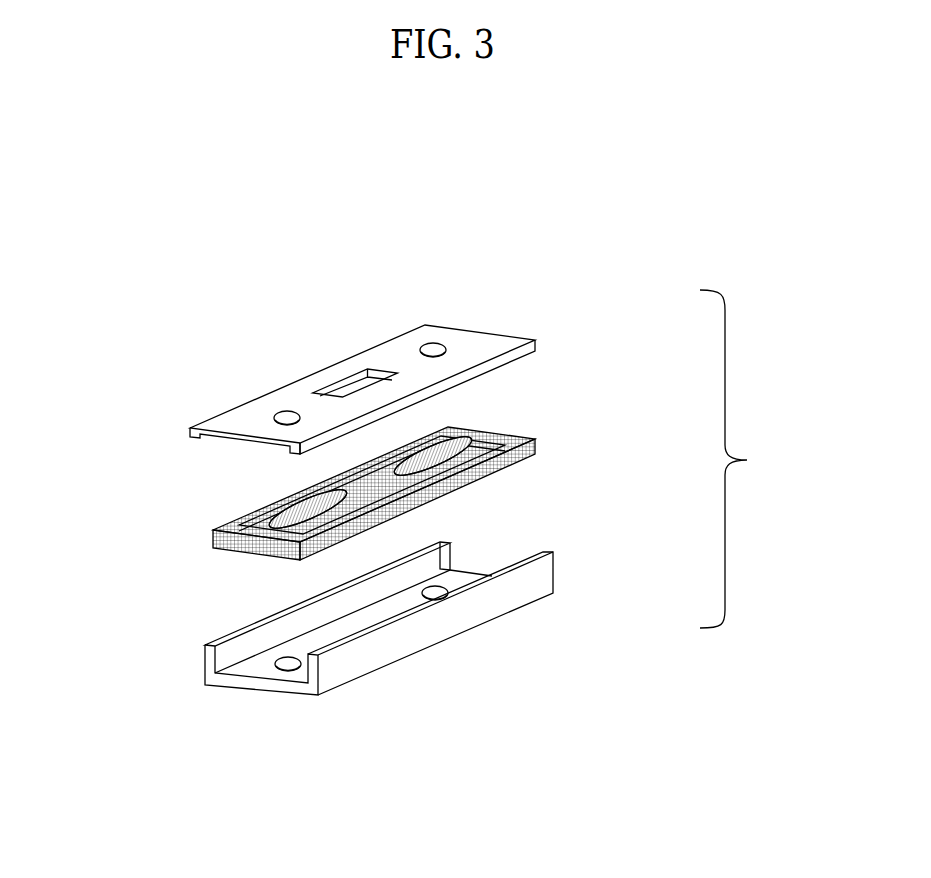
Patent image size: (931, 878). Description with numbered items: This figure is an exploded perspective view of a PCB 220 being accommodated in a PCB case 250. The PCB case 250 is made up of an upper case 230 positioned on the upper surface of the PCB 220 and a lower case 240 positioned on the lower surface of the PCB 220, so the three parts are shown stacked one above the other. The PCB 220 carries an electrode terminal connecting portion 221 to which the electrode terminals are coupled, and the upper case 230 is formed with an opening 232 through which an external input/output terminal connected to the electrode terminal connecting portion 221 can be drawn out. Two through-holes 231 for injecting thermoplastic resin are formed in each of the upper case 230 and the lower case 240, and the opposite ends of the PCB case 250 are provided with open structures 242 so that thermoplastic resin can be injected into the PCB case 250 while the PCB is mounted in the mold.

The PCB 220 is at (307, 493).
The electrode terminal connecting portion 221 is at (278, 502).
The upper case 230 is at (584, 343).
The through-holes 231 is at (437, 349).
The opening 232 is at (352, 387).
The lower case 240 is at (445, 640).
The open structures 242 is at (489, 549).
The PCB case 250 is at (746, 459).